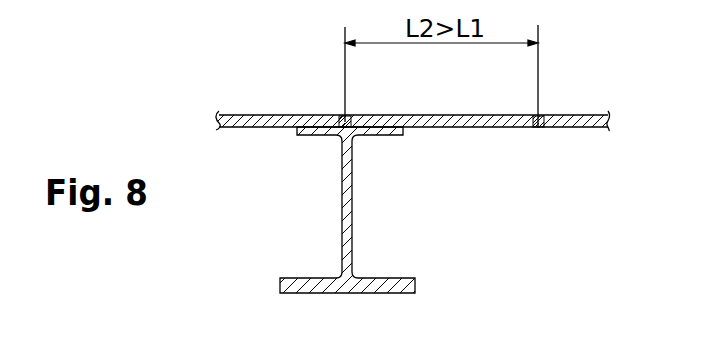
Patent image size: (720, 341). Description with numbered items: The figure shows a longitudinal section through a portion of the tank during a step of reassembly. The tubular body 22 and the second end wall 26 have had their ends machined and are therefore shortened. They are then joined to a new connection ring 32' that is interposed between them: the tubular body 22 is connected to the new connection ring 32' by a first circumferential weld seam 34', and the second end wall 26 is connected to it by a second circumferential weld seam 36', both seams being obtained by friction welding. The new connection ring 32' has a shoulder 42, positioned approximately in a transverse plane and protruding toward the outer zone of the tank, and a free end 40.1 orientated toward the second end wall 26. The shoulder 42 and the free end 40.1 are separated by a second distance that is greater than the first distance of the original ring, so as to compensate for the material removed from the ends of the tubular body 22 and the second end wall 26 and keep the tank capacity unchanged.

The tubular body 22 is at (254, 105).
The second end wall 26 is at (600, 102).
The new connection ring 32' is at (397, 181).
The first circumferential weld seam 34' is at (328, 73).
The second circumferential weld seam 36' is at (555, 74).
The shoulder 42 is at (368, 117).
The free end 40.1 is at (540, 128).